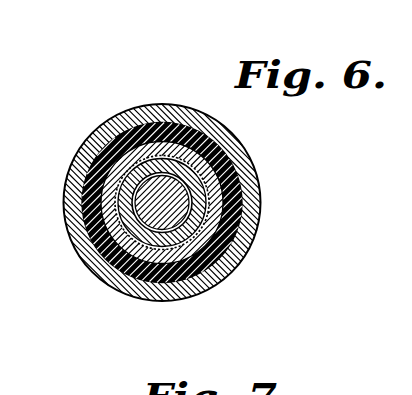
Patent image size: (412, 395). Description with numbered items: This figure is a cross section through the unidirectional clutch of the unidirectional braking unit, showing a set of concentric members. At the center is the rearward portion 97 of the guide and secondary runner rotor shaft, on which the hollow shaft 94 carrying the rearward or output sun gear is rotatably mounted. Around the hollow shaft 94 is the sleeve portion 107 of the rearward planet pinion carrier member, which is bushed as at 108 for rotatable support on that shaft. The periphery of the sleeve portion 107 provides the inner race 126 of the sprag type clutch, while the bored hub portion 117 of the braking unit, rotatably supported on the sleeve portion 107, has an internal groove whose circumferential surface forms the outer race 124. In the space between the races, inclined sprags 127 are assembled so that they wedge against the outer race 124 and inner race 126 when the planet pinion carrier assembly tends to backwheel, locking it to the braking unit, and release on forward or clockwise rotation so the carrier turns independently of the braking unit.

The inner race 126 is at (203, 294).
The outer race 124 is at (207, 283).
The bored hub portion 117 is at (240, 142).
The sprags 127 is at (238, 159).
The sleeve portion 107 is at (243, 188).
The bushing 108 is at (244, 204).
The hollow shaft 94 is at (225, 238).
The rearward portion of the guide and secondary runner rotor shaft 97 is at (222, 259).